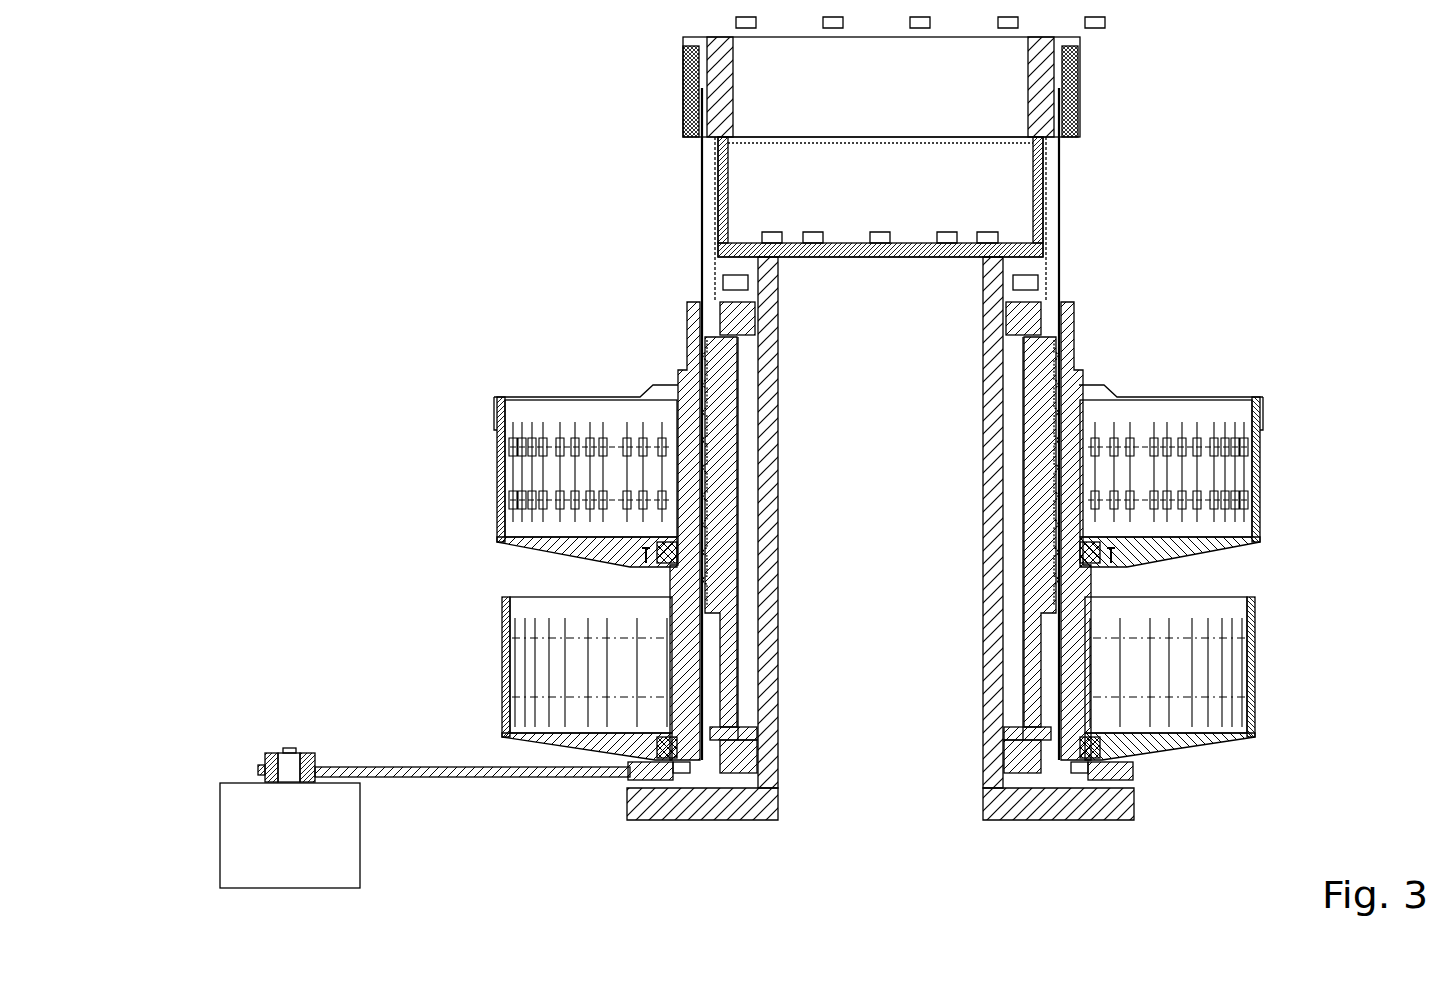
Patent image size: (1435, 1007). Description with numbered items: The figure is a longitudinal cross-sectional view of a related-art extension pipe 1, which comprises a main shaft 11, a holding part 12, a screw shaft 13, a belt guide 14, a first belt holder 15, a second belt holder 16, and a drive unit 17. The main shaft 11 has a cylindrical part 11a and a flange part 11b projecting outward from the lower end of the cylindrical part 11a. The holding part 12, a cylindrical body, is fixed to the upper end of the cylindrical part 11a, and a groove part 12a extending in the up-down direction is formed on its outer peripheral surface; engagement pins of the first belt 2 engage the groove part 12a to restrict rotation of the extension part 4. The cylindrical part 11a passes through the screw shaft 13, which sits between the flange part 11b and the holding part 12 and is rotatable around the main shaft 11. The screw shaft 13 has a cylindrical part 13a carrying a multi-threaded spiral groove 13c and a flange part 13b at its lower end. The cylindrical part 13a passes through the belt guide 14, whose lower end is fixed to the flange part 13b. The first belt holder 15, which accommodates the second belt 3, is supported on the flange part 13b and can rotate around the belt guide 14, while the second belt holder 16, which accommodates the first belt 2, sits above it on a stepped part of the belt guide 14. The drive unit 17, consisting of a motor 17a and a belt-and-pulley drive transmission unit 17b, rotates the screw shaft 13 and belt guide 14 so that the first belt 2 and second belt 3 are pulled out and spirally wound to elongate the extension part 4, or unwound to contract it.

The extension pipe 1 is at (121, 77).
The first belt 2 is at (1218, 470).
The second belt 3 is at (1210, 663).
The extension part 4 is at (1062, 175).
The main shaft 11 is at (880, 868).
The cylindrical part 11a is at (780, 578).
The flange part 11b is at (677, 812).
The holding part 12 is at (746, 197).
The groove part 12a is at (706, 216).
The screw shaft 13 is at (832, 592).
The cylindrical part 13a is at (725, 527).
The flange part 13b is at (620, 785).
The spiral groove 13c is at (710, 484).
The belt guide 14 is at (690, 703).
The first belt holder 15 is at (1282, 708).
The second belt holder 16 is at (482, 470).
The drive unit 17 is at (374, 777).
The motor 17a is at (245, 838).
The drive transmission unit 17b is at (398, 768).